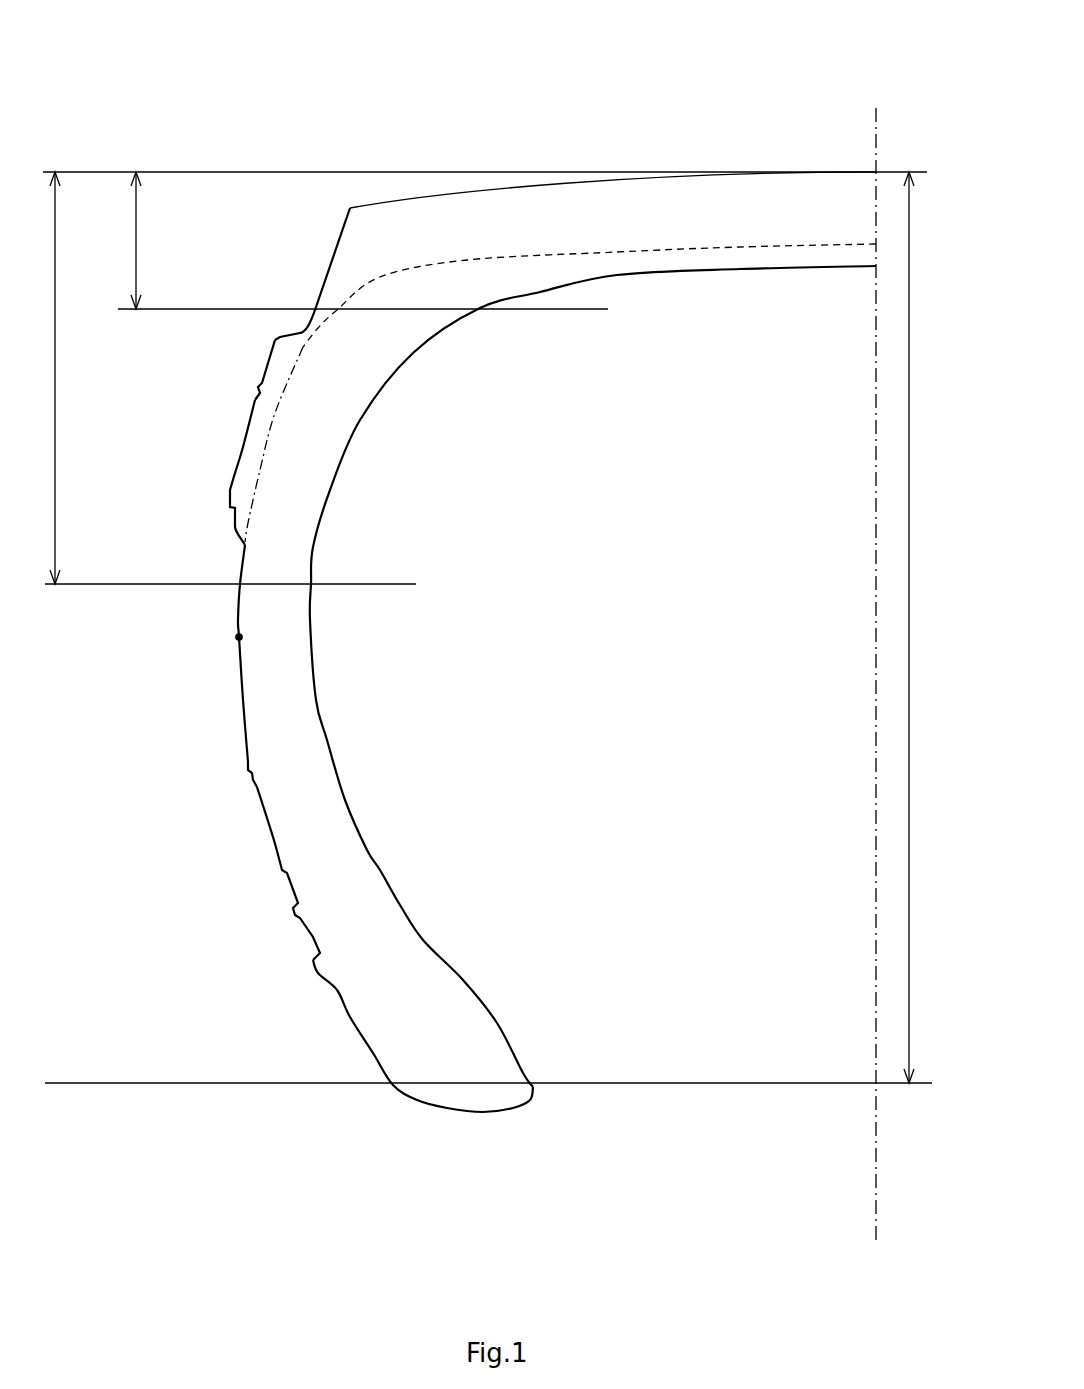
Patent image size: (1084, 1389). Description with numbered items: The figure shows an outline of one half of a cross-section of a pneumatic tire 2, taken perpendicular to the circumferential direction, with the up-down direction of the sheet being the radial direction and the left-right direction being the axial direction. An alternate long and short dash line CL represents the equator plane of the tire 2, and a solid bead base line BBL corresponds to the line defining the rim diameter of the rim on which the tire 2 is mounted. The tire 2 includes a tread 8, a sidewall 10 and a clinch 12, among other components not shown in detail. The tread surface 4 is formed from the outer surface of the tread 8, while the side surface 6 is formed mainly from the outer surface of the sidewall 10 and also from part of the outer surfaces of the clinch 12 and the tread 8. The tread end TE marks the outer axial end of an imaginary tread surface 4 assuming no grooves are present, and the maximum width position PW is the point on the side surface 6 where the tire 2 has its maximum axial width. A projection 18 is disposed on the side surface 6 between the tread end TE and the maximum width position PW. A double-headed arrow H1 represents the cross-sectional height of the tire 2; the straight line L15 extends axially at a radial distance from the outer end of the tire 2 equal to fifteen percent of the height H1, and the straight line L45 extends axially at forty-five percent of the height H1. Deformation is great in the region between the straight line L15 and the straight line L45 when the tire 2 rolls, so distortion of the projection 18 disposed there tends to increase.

The pneumatic tire 2 is at (487, 559).
The tread surface 4 is at (485, 190).
The side surface 6 is at (224, 584).
The tread 8 is at (776, 195).
The sidewall 10 is at (282, 795).
The clinch 12 is at (363, 1002).
The projection 18 is at (243, 467).
The tread end TE is at (350, 208).
The maximum width position PW is at (239, 637).
The straight line L15 is at (215, 312).
The straight line L45 is at (147, 585).
The bead base line BBL is at (668, 1085).
The equator plane CL is at (879, 1167).
The cross-sectional height H1 is at (498, 627).